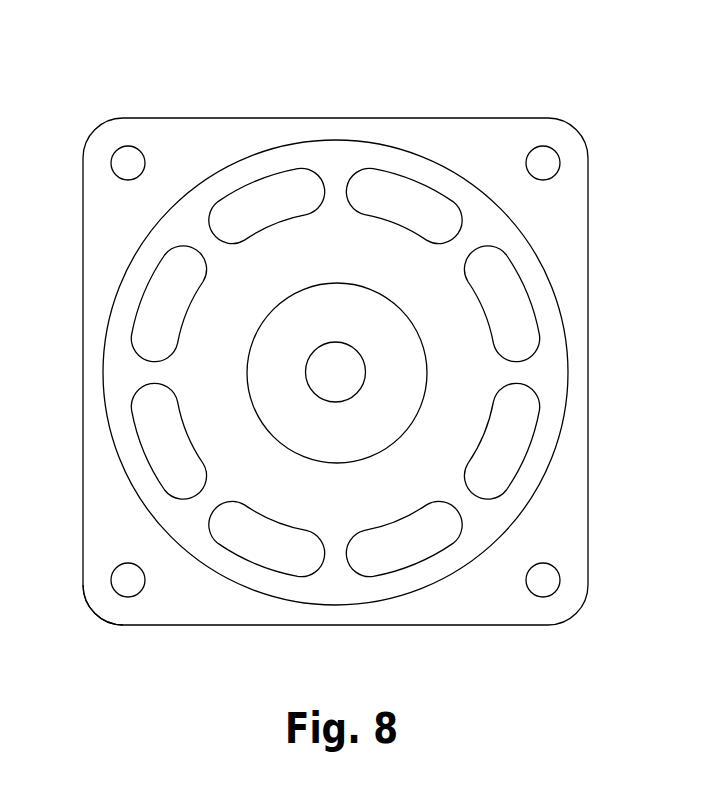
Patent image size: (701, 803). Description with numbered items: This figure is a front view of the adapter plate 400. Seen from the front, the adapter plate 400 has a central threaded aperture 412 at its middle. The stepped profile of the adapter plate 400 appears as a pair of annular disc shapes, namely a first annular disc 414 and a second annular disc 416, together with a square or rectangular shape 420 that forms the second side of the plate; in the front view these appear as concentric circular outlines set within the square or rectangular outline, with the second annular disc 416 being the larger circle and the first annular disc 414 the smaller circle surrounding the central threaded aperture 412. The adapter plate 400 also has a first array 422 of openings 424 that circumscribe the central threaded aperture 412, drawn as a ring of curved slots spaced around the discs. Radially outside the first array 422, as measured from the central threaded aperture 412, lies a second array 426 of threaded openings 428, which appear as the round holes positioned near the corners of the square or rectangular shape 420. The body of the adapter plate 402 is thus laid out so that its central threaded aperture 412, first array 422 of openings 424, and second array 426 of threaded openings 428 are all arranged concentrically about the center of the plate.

The adapter plate 400 is at (595, 127).
The mounting plate 402 is at (480, 145).
The central threaded aperture 412 is at (337, 402).
The first annular disc 414 is at (423, 392).
The second annular disc 416 is at (545, 268).
The square or rectangular shape 420 is at (343, 118).
The first array 422 is at (270, 571).
The openings 424 is at (225, 553).
The second array 426 is at (102, 595).
The threaded openings 428 is at (112, 578).